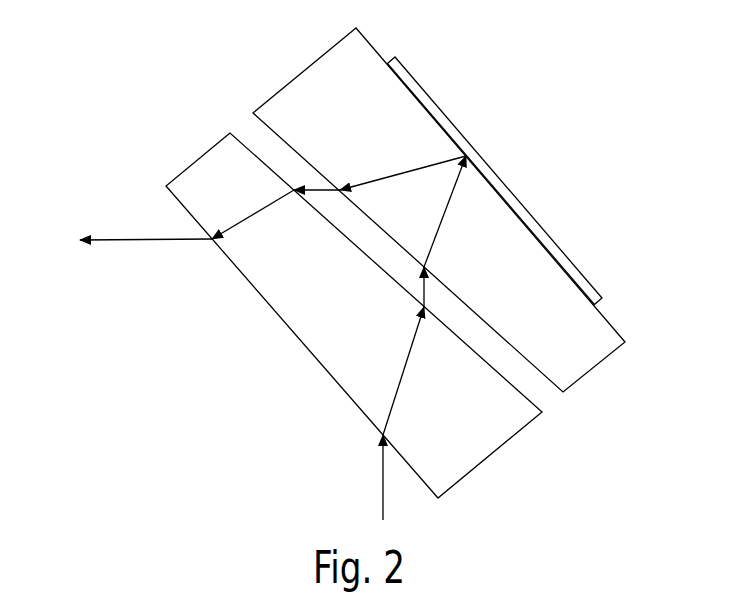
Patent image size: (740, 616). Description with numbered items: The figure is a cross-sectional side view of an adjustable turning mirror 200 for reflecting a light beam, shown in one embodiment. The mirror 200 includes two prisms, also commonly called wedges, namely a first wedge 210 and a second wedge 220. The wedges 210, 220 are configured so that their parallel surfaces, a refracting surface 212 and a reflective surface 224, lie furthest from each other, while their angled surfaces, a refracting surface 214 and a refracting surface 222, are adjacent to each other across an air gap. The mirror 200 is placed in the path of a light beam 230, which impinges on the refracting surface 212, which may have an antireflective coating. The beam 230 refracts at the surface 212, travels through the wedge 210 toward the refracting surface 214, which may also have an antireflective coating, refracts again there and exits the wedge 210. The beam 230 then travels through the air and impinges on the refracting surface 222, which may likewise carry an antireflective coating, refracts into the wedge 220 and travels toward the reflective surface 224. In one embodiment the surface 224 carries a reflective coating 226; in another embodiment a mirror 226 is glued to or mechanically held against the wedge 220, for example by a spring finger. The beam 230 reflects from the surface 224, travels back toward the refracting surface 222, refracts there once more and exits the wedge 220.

The adjustable turning mirror 200 is at (142, 98).
The wedge 210 is at (345, 308).
The refracting surface 212 is at (397, 452).
The refracting surface 214 is at (436, 317).
The wedge 220 is at (582, 353).
The refracting surface 222 is at (437, 279).
The reflective surface 224 is at (480, 173).
The reflective coating 226 is at (567, 257).
The light beam 230 is at (382, 492).